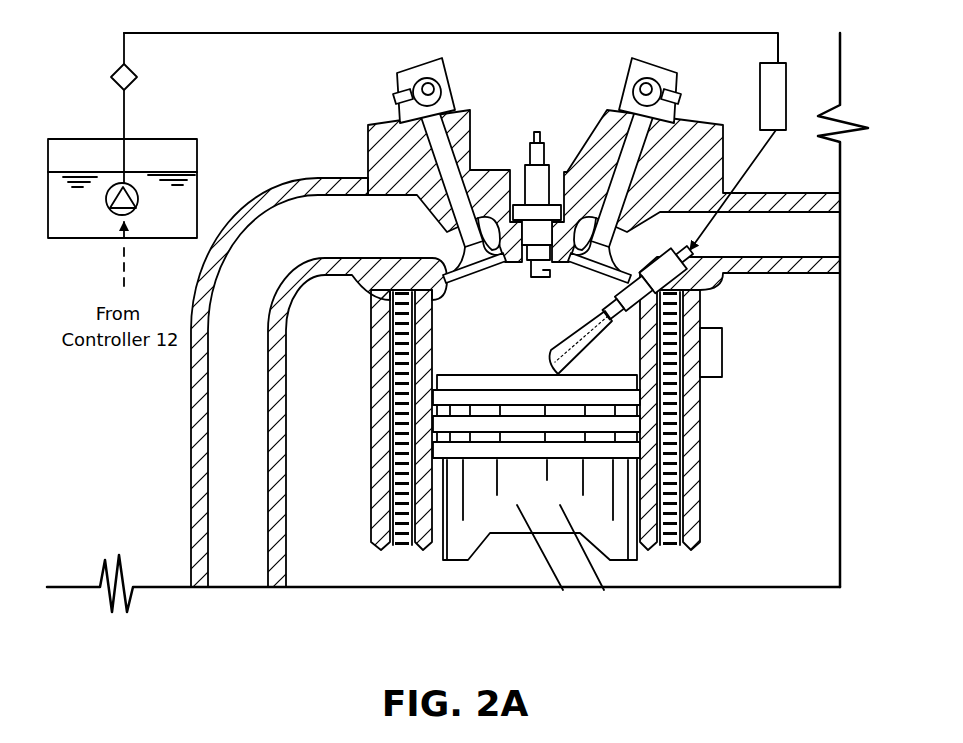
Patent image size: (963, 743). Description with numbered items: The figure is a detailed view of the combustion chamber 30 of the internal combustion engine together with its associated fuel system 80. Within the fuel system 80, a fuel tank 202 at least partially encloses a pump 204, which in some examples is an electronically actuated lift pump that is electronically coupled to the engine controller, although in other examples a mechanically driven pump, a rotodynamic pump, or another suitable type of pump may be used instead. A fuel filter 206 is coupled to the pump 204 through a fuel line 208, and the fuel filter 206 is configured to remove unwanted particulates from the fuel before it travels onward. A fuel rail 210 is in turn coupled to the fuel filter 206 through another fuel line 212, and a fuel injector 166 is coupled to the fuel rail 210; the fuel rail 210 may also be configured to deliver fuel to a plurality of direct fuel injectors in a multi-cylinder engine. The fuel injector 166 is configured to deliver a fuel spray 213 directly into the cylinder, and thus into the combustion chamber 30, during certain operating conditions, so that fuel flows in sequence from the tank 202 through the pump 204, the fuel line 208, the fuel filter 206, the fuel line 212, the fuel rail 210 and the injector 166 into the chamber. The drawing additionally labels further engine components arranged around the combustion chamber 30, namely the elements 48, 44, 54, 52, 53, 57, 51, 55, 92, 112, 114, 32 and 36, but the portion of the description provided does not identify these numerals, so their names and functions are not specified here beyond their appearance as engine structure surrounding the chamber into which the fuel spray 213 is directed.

The fuel system 80 is at (108, 38).
The fuel line 212 is at (182, 35).
The fuel filter 206 is at (145, 62).
The fuel line 208 is at (123, 125).
The fuel tank 202 is at (148, 139).
The pump 204 is at (139, 200).
The intake passage 48 is at (388, 243).
The exhaust passage 44 is at (755, 246).
The intake valve 54 is at (445, 162).
The exhaust valve 52 is at (628, 152).
The intake cam 53 is at (453, 92).
The intake cam sensor 57 is at (398, 97).
The exhaust cam 51 is at (627, 97).
The exhaust cam sensor 55 is at (667, 92).
The spark plug 92 is at (543, 158).
The fuel rail 210 is at (778, 63).
The fuel injector 166 is at (697, 300).
The fuel spray 213 is at (555, 352).
The sensor 112 is at (723, 367).
The coolant sleeve 114 is at (683, 475).
The combustion chamber 30 is at (533, 358).
The cylinder wall 32 is at (433, 522).
The piston 36 is at (540, 520).